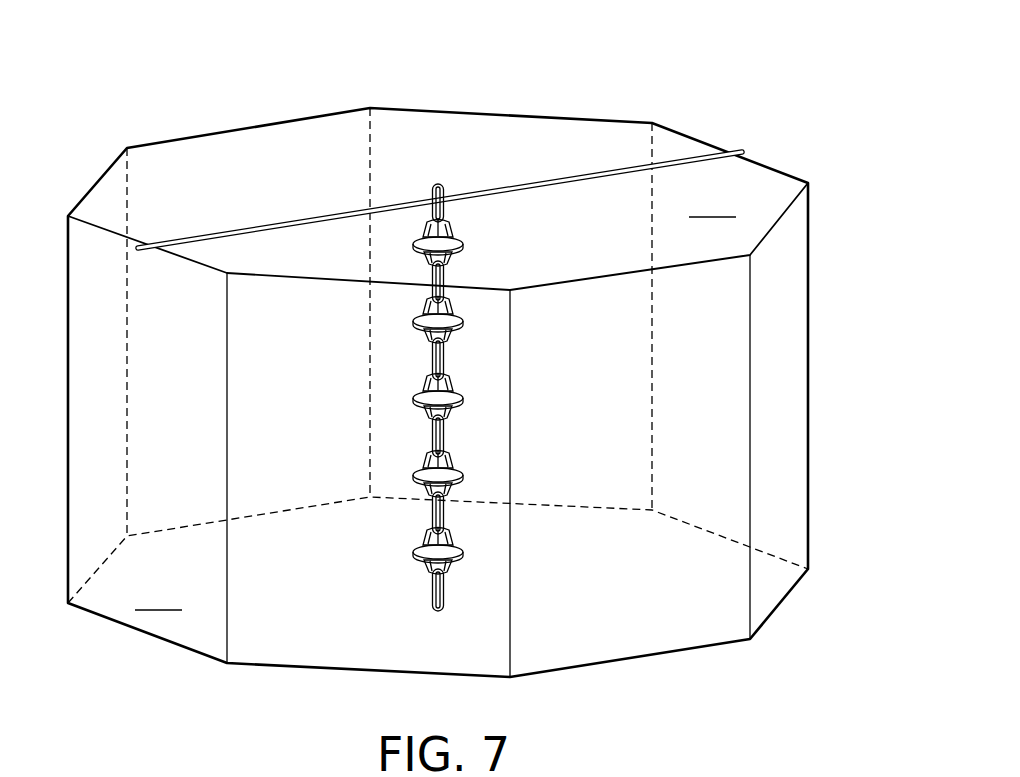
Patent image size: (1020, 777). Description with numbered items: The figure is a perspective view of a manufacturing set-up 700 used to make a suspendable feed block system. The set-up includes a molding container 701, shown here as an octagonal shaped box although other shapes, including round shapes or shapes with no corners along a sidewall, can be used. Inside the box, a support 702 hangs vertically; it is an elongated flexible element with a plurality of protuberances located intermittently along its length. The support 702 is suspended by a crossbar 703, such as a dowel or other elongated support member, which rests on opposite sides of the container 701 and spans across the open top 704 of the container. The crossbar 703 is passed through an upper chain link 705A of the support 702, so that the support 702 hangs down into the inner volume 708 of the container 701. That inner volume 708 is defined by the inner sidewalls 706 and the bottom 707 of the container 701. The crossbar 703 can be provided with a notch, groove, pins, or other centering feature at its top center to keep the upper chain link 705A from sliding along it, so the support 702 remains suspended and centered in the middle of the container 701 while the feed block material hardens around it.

The manufacturing set-up 700 is at (487, 350).
The molding container 701 is at (770, 167).
The support 702 is at (445, 433).
The crossbar 703 is at (260, 223).
The open top 704 is at (400, 140).
The upper chain link 705A is at (450, 186).
The inner sidewalls 706 is at (712, 200).
The bottom 707 is at (158, 592).
The inner volume 708 is at (412, 185).